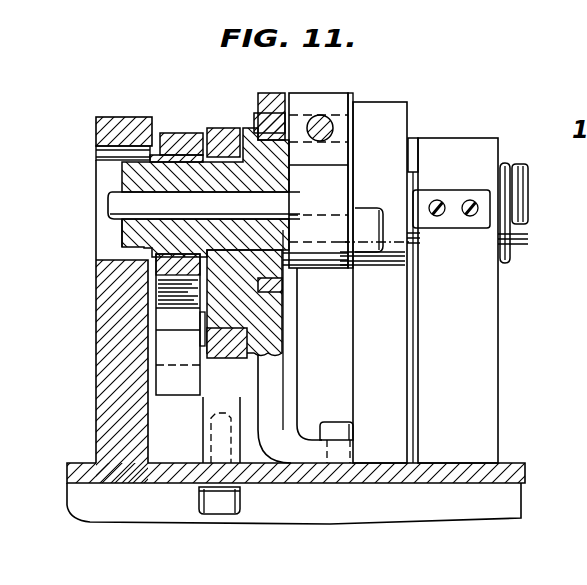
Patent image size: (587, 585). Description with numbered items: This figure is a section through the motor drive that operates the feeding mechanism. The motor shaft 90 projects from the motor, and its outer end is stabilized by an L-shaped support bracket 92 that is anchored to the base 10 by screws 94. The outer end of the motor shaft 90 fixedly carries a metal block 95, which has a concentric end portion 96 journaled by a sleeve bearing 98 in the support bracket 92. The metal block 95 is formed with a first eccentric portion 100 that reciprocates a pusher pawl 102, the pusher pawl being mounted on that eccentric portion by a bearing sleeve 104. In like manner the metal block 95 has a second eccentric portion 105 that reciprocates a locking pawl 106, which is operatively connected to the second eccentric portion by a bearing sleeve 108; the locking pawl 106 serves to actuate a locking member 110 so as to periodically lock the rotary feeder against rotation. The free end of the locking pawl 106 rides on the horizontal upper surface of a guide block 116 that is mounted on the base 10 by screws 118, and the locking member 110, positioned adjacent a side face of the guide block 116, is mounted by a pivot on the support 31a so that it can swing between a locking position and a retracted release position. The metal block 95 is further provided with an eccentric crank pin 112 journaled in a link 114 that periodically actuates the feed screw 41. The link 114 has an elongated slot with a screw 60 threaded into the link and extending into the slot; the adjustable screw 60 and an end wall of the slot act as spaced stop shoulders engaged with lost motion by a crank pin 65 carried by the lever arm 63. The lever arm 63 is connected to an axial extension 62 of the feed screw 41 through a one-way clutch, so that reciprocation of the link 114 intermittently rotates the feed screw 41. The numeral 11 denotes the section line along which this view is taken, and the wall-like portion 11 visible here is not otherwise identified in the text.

The base 10 is at (465, 468).
The upright wall 11 is at (108, 418).
The support 31a is at (477, 362).
The feed screw 41 is at (517, 229).
The screw 60 is at (322, 121).
The axial extension 62 is at (413, 180).
The lever arm 63 is at (407, 258).
The crank pin 65 is at (350, 125).
The motor shaft 90 is at (116, 198).
The L-shaped support bracket 92 is at (268, 375).
The screws 94 is at (328, 432).
The metal block 95 is at (118, 232).
The concentric end portion 96 is at (270, 150).
The sleeve bearing 98 is at (284, 286).
The first eccentric portion 100 is at (160, 230).
The pusher pawl 102 is at (190, 136).
The bearing sleeve 104 is at (150, 172).
The second eccentric portion 105 is at (245, 312).
The locking pawl 106 is at (241, 130).
The bearing sleeve 108 is at (223, 130).
The locking member 110 is at (167, 378).
The eccentric crank pin 112 is at (372, 233).
The link 114 is at (338, 182).
The guide block 116 is at (197, 433).
The screws 118 is at (221, 505).